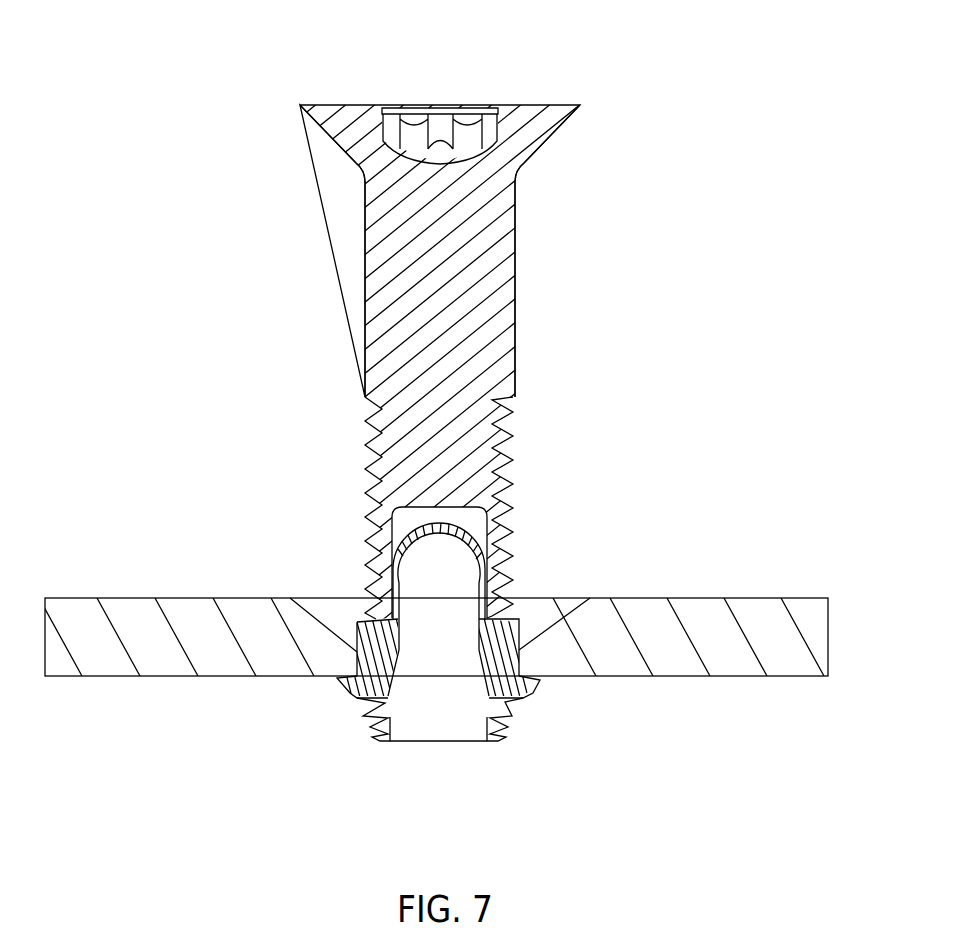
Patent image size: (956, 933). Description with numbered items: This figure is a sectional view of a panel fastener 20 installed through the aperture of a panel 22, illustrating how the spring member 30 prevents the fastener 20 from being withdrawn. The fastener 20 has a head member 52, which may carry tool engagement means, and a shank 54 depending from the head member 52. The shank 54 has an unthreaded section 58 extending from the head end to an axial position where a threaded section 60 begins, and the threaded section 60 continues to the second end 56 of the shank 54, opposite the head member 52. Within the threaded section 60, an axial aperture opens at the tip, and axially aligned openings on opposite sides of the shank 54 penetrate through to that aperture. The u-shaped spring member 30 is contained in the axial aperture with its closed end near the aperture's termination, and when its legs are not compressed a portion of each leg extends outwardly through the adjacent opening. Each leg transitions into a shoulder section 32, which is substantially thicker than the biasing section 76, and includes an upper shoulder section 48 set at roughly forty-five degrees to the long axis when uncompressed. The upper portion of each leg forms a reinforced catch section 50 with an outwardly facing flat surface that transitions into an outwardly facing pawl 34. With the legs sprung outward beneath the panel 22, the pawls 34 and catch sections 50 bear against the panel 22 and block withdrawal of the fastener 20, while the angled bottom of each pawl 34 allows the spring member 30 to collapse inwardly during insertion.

The panel fastener 20 is at (522, 295).
The panel 22 is at (750, 612).
The spring member 30 is at (463, 679).
The shoulder section 32 is at (525, 608).
The pawl 34 is at (340, 697).
The upper shoulder section 48 is at (364, 620).
The reinforced catch section 50 is at (505, 645).
The head member 52 is at (529, 97).
The shank 54 is at (526, 170).
The second end 56 is at (383, 742).
The unthreaded section 58 is at (355, 178).
The threaded section 60 is at (345, 435).
The biasing section 76 is at (441, 523).